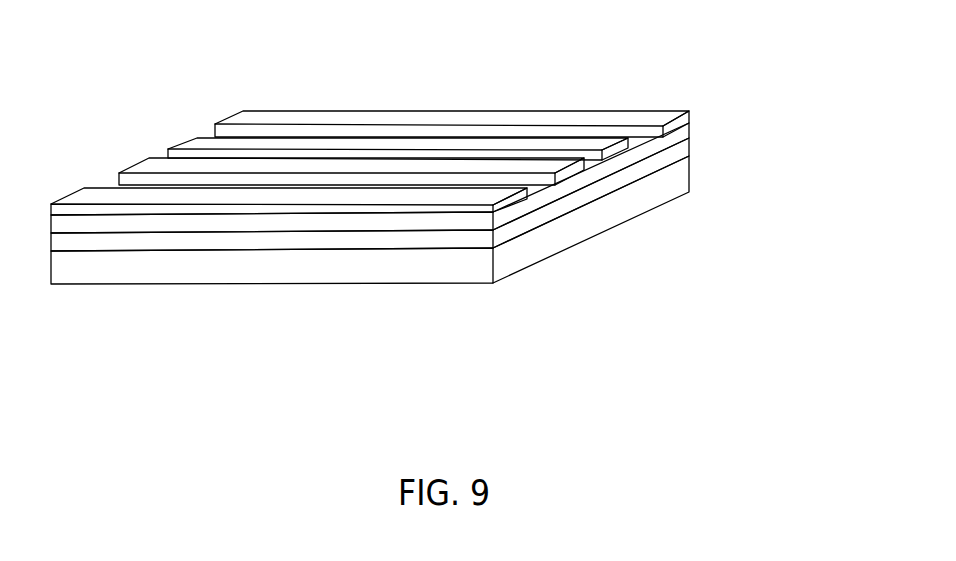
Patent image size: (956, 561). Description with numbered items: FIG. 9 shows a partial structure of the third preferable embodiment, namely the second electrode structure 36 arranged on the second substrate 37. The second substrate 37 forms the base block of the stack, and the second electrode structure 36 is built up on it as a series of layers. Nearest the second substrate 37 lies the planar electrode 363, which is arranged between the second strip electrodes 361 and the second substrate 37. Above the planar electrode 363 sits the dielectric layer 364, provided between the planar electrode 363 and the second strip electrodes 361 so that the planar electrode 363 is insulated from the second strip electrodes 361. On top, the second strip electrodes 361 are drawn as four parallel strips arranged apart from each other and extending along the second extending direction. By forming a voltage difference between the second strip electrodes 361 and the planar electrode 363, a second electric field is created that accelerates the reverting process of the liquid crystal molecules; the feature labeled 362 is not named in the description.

The second electrode structure 36 is at (442, 198).
The second strip electrodes 361 is at (565, 171).
The second strip electrodes 362 is at (633, 141).
The planar electrode 363 is at (512, 237).
The dielectric layer 364 is at (543, 195).
The second substrate 37 is at (442, 267).